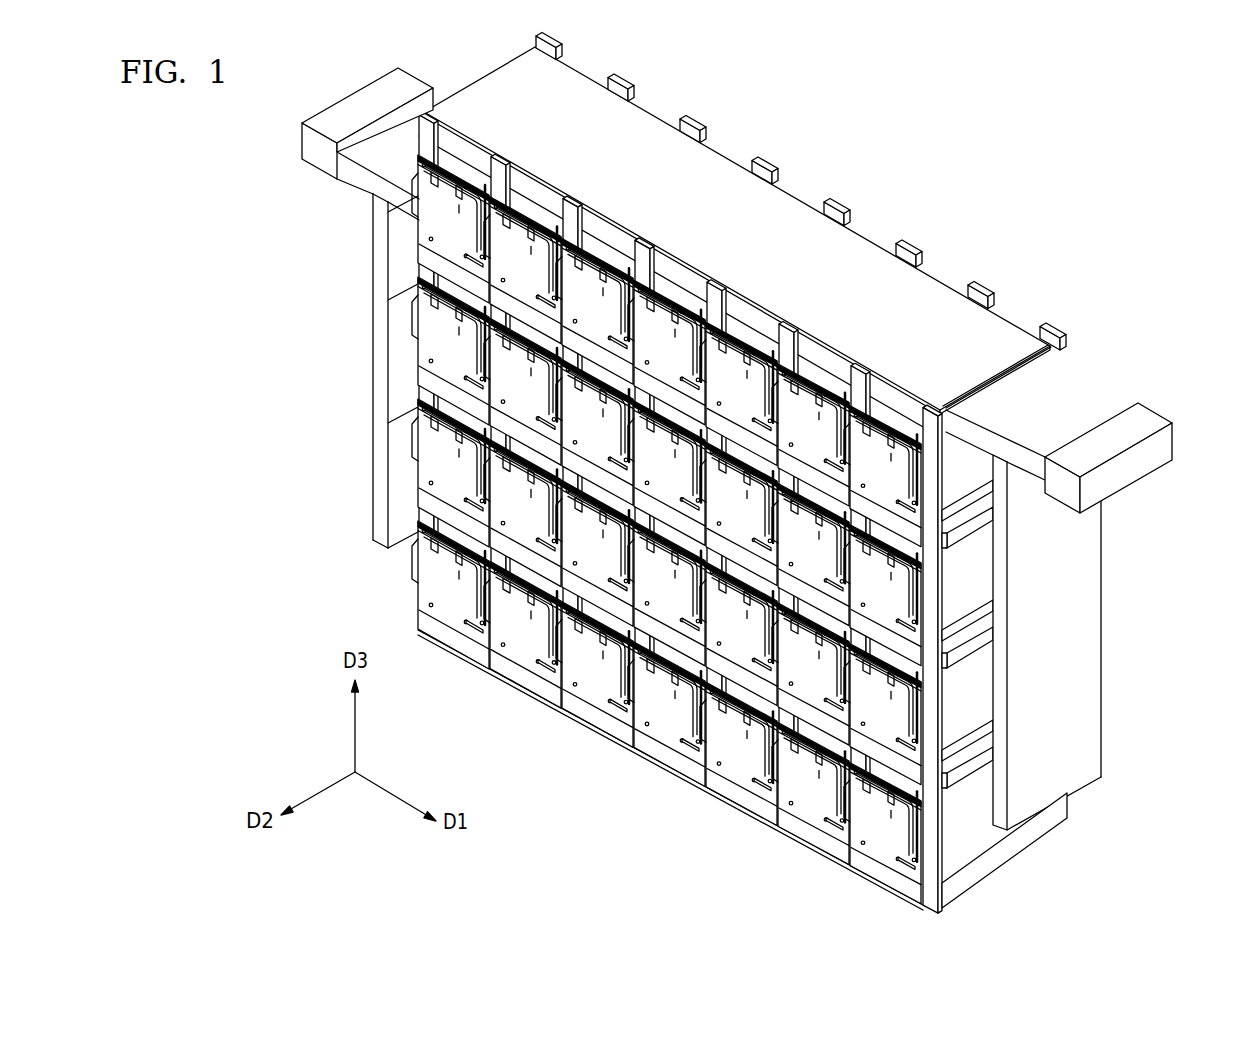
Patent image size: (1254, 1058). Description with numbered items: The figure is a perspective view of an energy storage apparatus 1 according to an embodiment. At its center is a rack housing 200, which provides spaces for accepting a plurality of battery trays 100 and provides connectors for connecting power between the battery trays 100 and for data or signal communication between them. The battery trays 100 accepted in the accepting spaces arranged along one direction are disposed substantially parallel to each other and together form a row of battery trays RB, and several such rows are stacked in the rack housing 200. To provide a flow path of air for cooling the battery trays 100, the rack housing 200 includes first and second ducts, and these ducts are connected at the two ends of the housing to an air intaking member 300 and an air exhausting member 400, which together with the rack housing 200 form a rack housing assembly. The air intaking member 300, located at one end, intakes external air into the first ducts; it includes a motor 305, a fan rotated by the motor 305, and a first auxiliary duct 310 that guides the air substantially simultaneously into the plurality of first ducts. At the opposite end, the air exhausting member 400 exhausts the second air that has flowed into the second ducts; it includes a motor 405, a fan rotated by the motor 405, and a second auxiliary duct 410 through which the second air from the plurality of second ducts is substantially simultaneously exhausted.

The energy storage apparatus 1 is at (716, 473).
The battery tray 100 is at (437, 220).
The rack housing 200 is at (927, 307).
The air intaking member 300 is at (319, 295).
The motor 305 is at (318, 162).
The first auxiliary duct 310 is at (357, 178).
The air exhausting member 400 is at (1085, 655).
The motor 405 is at (1126, 472).
The second auxiliary duct 410 is at (1083, 580).
The row of battery trays RB is at (405, 451).